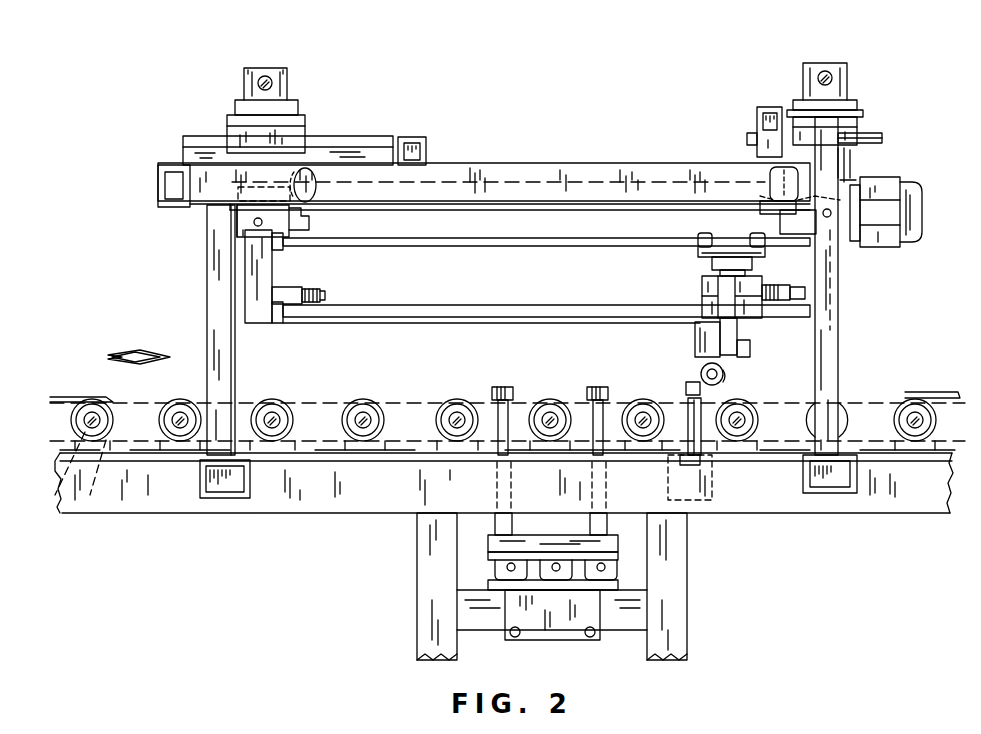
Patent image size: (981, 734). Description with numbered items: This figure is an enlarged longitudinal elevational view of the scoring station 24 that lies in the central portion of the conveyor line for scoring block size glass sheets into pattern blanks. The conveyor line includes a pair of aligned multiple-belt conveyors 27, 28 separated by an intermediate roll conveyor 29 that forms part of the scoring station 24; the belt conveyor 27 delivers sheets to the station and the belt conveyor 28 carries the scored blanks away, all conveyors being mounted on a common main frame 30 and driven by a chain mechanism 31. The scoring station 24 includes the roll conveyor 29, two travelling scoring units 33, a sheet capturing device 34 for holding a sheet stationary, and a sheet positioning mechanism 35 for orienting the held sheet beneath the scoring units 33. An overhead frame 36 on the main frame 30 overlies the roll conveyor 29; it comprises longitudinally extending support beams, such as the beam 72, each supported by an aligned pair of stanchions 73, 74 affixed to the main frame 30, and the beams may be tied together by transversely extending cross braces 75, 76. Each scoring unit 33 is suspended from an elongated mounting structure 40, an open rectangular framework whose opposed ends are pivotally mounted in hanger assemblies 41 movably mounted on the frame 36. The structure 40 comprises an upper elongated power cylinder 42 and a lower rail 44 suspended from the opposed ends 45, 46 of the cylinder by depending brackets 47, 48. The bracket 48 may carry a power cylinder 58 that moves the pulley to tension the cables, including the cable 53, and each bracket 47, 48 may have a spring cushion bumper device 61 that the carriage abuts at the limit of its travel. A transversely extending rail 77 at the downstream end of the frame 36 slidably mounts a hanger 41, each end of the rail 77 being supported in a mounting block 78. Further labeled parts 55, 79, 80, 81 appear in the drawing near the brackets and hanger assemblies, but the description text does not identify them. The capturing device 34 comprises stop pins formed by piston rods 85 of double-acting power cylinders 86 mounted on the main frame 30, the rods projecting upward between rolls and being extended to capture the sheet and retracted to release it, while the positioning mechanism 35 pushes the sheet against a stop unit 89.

The scoring station 24 is at (573, 150).
The multiple-belt conveyor 27 is at (76, 396).
The multiple-belt conveyor 28 is at (932, 390).
The roll conveyor 29 is at (380, 397).
The main frame 30 is at (882, 514).
The chain mechanism 31 is at (143, 402).
The scoring unit 33 is at (690, 343).
The sheet capturing device 34 is at (690, 382).
The sheet positioning mechanism 35 is at (597, 388).
The overhead frame 36 is at (471, 160).
The elongated mounting structure 40 is at (330, 320).
The hanger assembly 41 is at (290, 64).
The upper elongated power cylinder 42 is at (531, 180).
The lower rail 44 is at (531, 305).
The end of power cylinder 45 is at (331, 165).
The end of power cylinder 46 is at (764, 182).
The depending bracket 47 is at (263, 266).
The depending bracket 48 is at (832, 258).
The cable 53 is at (436, 246).
The bearing block 55 is at (238, 220).
The power cylinder 58 is at (918, 196).
The spring cushion bumper device 61 is at (326, 296).
The support beam 72 is at (630, 162).
The stanchion 73 is at (215, 266).
The stanchion 74 is at (835, 340).
The cross brace 75 is at (176, 166).
The cross brace 76 is at (766, 108).
The rail 77 is at (826, 72).
The mounting block 78 is at (815, 62).
The pivot pin 79 is at (264, 76).
The slide block 80 is at (243, 140).
The guide bar 81 is at (373, 138).
The piston rod 85 is at (690, 400).
The double-acting power cylinder 86 is at (688, 440).
The stop unit 89 is at (490, 546).